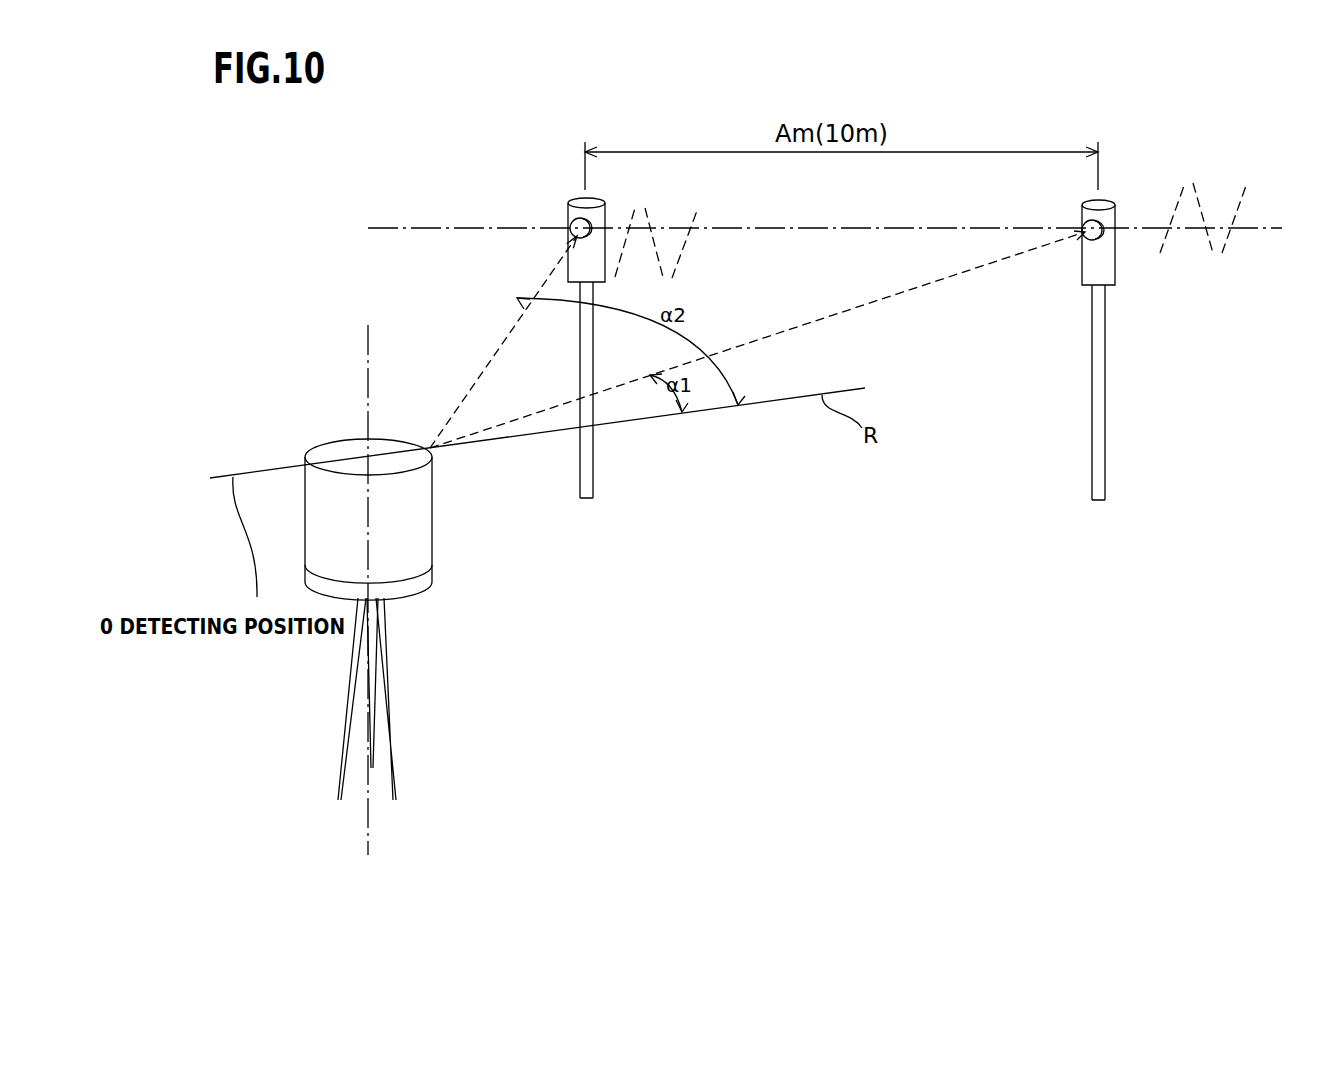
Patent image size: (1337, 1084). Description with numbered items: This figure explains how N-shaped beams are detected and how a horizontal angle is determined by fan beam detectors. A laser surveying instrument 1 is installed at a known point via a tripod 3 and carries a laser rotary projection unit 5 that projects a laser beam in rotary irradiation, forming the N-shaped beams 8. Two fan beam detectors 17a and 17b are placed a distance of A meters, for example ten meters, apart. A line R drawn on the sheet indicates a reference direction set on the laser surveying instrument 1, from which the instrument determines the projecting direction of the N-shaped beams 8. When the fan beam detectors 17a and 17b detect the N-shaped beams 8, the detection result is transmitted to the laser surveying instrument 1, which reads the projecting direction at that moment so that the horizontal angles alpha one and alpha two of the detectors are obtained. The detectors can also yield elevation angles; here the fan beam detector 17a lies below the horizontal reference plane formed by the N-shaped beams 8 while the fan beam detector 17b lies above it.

The laser surveying instrument 1 is at (432, 560).
The tripod 3 is at (392, 697).
The laser rotary projection unit 5 is at (335, 440).
The N-shaped beams 8 is at (468, 347).
The fan beam detector 17a is at (1118, 213).
The fan beam detector 17b is at (570, 210).